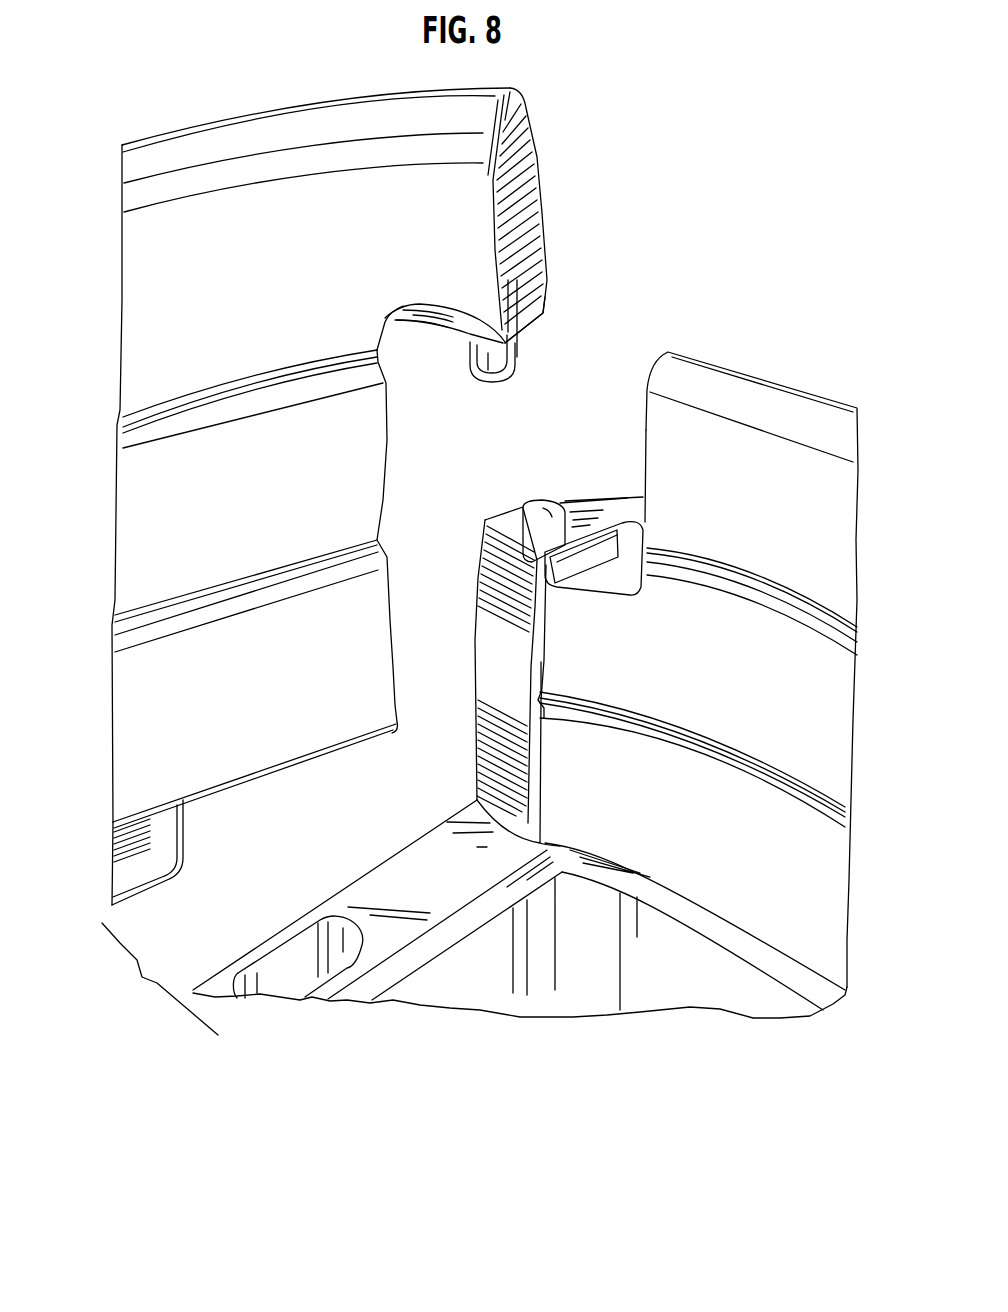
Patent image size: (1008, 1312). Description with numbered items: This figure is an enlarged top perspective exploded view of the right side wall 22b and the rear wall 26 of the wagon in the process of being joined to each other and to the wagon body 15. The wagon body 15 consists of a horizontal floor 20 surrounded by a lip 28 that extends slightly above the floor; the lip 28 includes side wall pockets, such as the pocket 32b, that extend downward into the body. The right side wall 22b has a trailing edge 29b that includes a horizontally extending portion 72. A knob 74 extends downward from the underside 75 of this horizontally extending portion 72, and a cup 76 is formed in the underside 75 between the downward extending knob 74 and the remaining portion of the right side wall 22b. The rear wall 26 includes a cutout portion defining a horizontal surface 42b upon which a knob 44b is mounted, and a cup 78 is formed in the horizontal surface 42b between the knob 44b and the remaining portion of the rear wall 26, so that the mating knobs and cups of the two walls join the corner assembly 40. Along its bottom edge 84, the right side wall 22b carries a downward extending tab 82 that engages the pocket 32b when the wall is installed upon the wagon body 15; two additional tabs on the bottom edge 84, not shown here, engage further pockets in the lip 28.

The wagon body 15 is at (556, 1045).
The horizontal floor 20 is at (586, 967).
The right side wall 22b is at (108, 405).
The rear wall 26 is at (861, 575).
The lip 28 is at (455, 879).
The trailing edge of right side wall 29b is at (295, 100).
The side wall pocket 32b is at (300, 960).
The connector assembly 40 is at (618, 323).
The horizontal surface 42b is at (562, 500).
The knob 44b is at (533, 500).
The horizontally extending portion 72 is at (540, 162).
The knob 74 is at (527, 387).
The underside 75 is at (533, 318).
The cup 76 is at (414, 323).
The cup 78 is at (622, 533).
The tab 82 is at (110, 867).
The bottom edge 84 is at (279, 767).